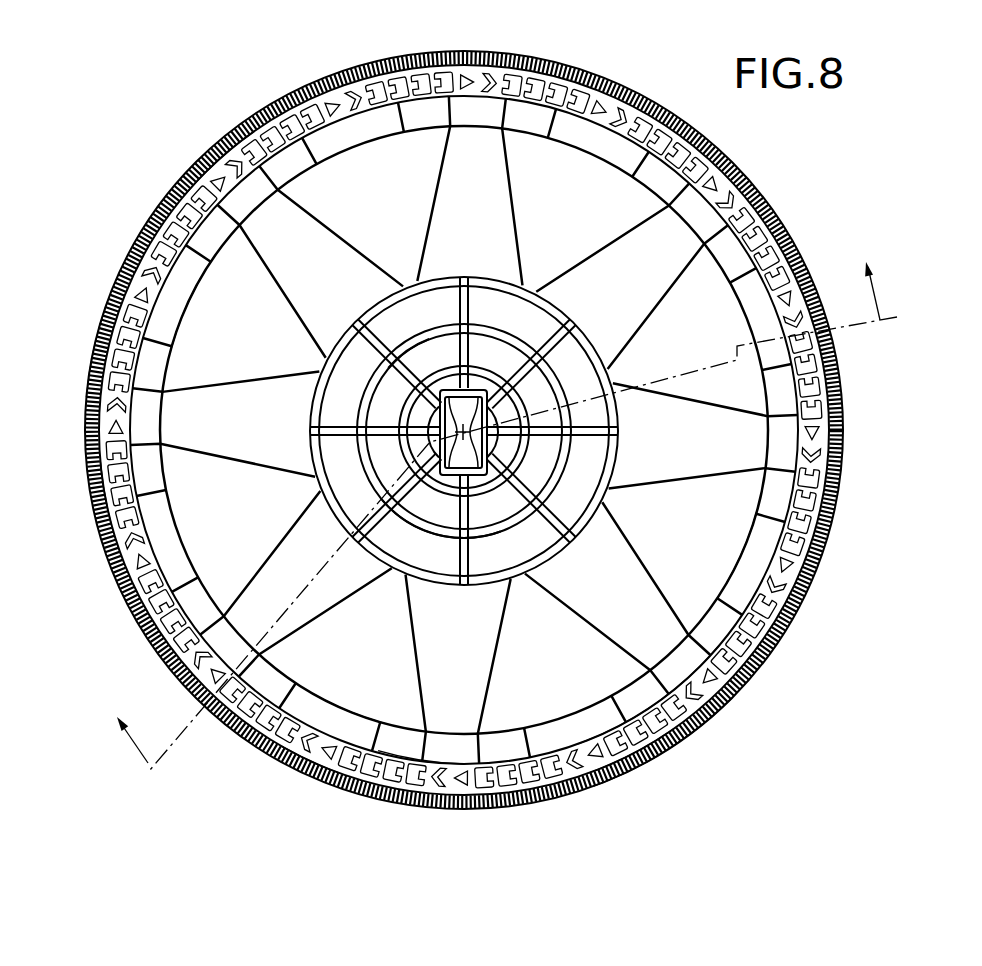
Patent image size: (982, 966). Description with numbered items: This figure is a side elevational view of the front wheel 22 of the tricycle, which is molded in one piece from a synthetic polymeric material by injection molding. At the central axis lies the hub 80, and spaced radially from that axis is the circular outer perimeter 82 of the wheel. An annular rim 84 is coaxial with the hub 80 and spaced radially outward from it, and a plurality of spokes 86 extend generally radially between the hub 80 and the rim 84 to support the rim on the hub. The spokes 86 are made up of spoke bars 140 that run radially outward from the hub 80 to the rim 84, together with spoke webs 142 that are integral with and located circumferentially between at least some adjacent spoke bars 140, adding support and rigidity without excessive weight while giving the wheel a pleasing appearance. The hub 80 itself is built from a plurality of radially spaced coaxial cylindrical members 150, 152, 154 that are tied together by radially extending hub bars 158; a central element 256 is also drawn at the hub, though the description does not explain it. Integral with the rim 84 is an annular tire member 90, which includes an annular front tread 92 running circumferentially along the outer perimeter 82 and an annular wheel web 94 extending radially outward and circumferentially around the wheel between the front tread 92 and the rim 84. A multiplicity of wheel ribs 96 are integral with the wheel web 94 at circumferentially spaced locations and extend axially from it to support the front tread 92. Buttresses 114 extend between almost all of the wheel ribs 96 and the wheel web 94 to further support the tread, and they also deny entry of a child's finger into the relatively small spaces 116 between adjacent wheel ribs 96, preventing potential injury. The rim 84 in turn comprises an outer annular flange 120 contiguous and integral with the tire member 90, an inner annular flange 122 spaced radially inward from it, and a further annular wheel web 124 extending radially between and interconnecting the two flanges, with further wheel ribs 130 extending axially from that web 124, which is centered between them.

The front wheel 22 is at (240, 117).
The circular outer perimeter 82 is at (503, 60).
The annular tire member 90 is at (190, 177).
The annular front tread 92 is at (103, 314).
The annular wheel web 94 is at (110, 402).
The wheel ribs 96 is at (98, 492).
The annular rim 84 is at (330, 158).
The spokes 86 is at (262, 270).
The spoke bars 140 is at (368, 248).
The spoke webs 142 is at (698, 382).
The hub 80 is at (446, 430).
The coaxial cylindrical member 150 is at (543, 565).
The coaxial cylindrical member 152 is at (420, 537).
The coaxial cylindrical member 154 is at (478, 502).
The hub bars 158 is at (457, 558).
The central bore 256 is at (437, 417).
The outer annular flange 120 is at (320, 770).
The inner annular flange 122 is at (390, 745).
The further wheel ribs 130 is at (660, 687).
The further annular wheel web 124 is at (590, 787).
The spaces 116 is at (634, 762).
The buttresses 114 is at (678, 740).